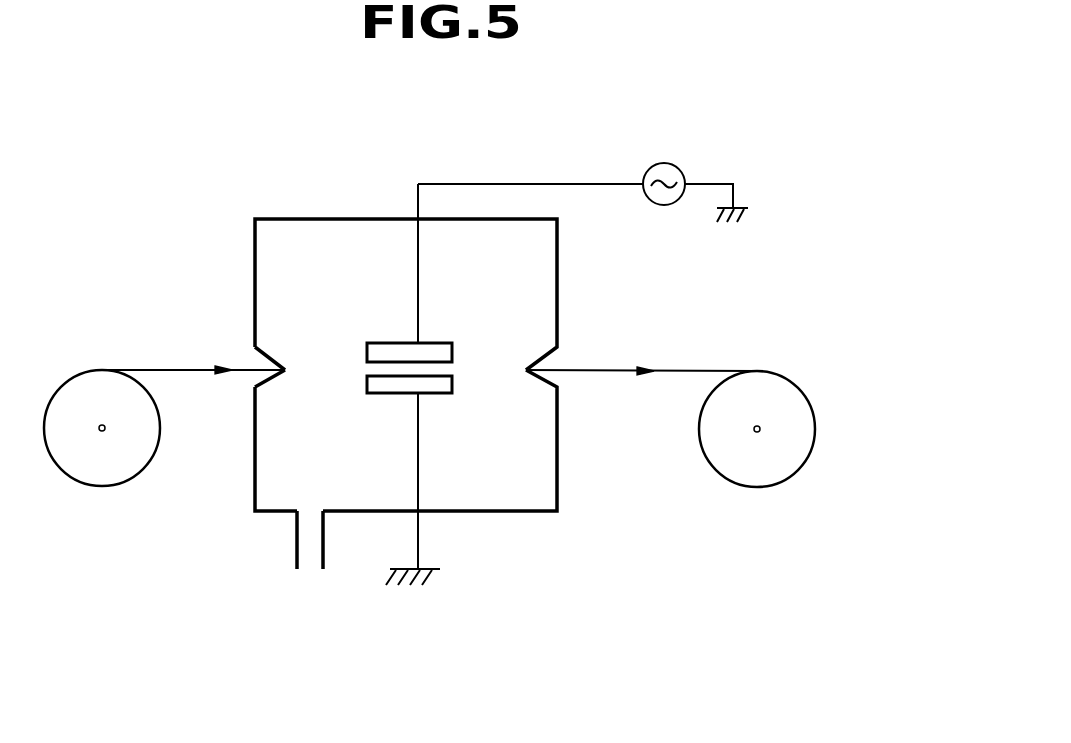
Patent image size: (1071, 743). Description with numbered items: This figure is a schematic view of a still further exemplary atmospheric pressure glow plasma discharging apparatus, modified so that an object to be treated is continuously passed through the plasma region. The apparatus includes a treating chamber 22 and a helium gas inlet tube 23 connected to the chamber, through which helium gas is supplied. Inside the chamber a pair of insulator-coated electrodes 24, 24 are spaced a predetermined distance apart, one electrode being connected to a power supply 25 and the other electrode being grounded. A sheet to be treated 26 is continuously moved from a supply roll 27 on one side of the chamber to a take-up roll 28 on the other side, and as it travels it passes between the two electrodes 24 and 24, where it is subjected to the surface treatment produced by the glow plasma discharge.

The treating chamber 22 is at (325, 218).
The helium gas inlet tube 23 is at (311, 558).
The insulator-coated electrodes 24 is at (450, 350).
The power supply 25 is at (677, 163).
The sheet to be treated 26 is at (178, 368).
The supply roll 27 is at (120, 473).
The take-up roll 28 is at (777, 473).